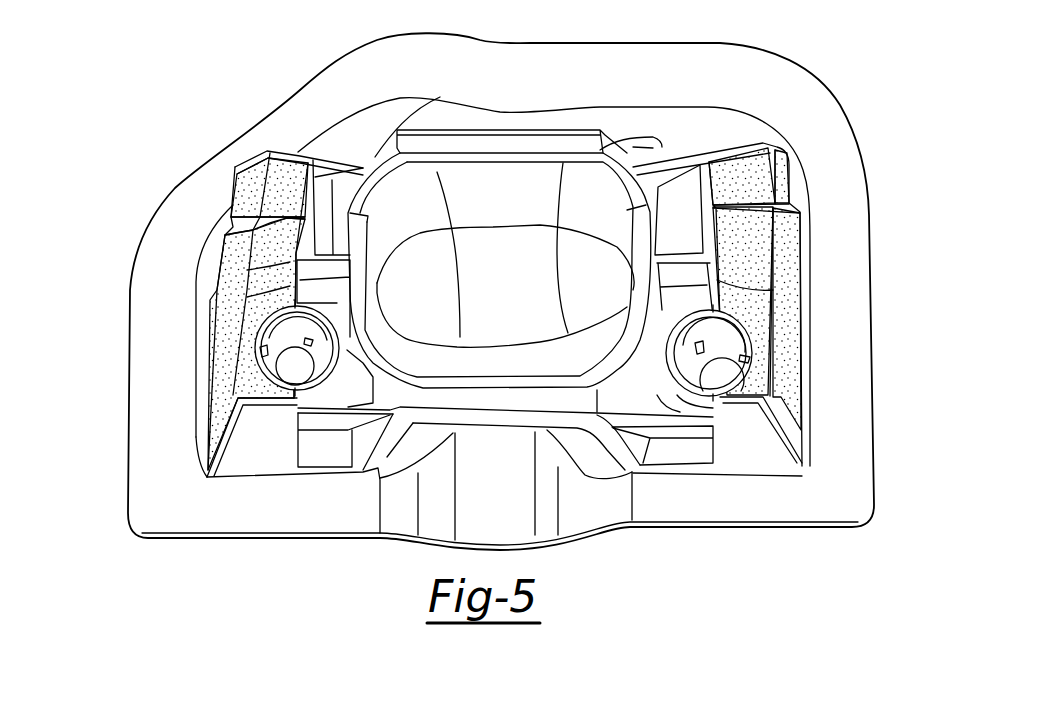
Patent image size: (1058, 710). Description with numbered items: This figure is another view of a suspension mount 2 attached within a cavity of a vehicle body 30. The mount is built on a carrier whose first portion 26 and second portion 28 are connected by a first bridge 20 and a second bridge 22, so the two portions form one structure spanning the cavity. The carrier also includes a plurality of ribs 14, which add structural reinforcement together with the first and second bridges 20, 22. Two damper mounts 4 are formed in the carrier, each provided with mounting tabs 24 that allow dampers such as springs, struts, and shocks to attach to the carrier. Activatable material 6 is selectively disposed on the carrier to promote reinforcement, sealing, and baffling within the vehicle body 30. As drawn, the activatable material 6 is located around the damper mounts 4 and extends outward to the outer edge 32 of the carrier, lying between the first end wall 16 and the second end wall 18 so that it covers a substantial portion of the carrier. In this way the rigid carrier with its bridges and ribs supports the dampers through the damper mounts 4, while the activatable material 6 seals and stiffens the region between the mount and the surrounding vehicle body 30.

The suspension mount 2 is at (377, 165).
The damper mounts 4 is at (726, 378).
The activatable material 6 is at (783, 230).
The ribs 14 is at (327, 367).
The first end wall 16 is at (315, 468).
The second end wall 18 is at (273, 150).
The first bridge 20 is at (493, 420).
The second bridge 22 is at (577, 130).
The mounting tabs 24 is at (733, 342).
The first portion 26 is at (196, 415).
The second portion 28 is at (811, 438).
The vehicle body 30 is at (788, 492).
The outer edge 32 is at (208, 348).